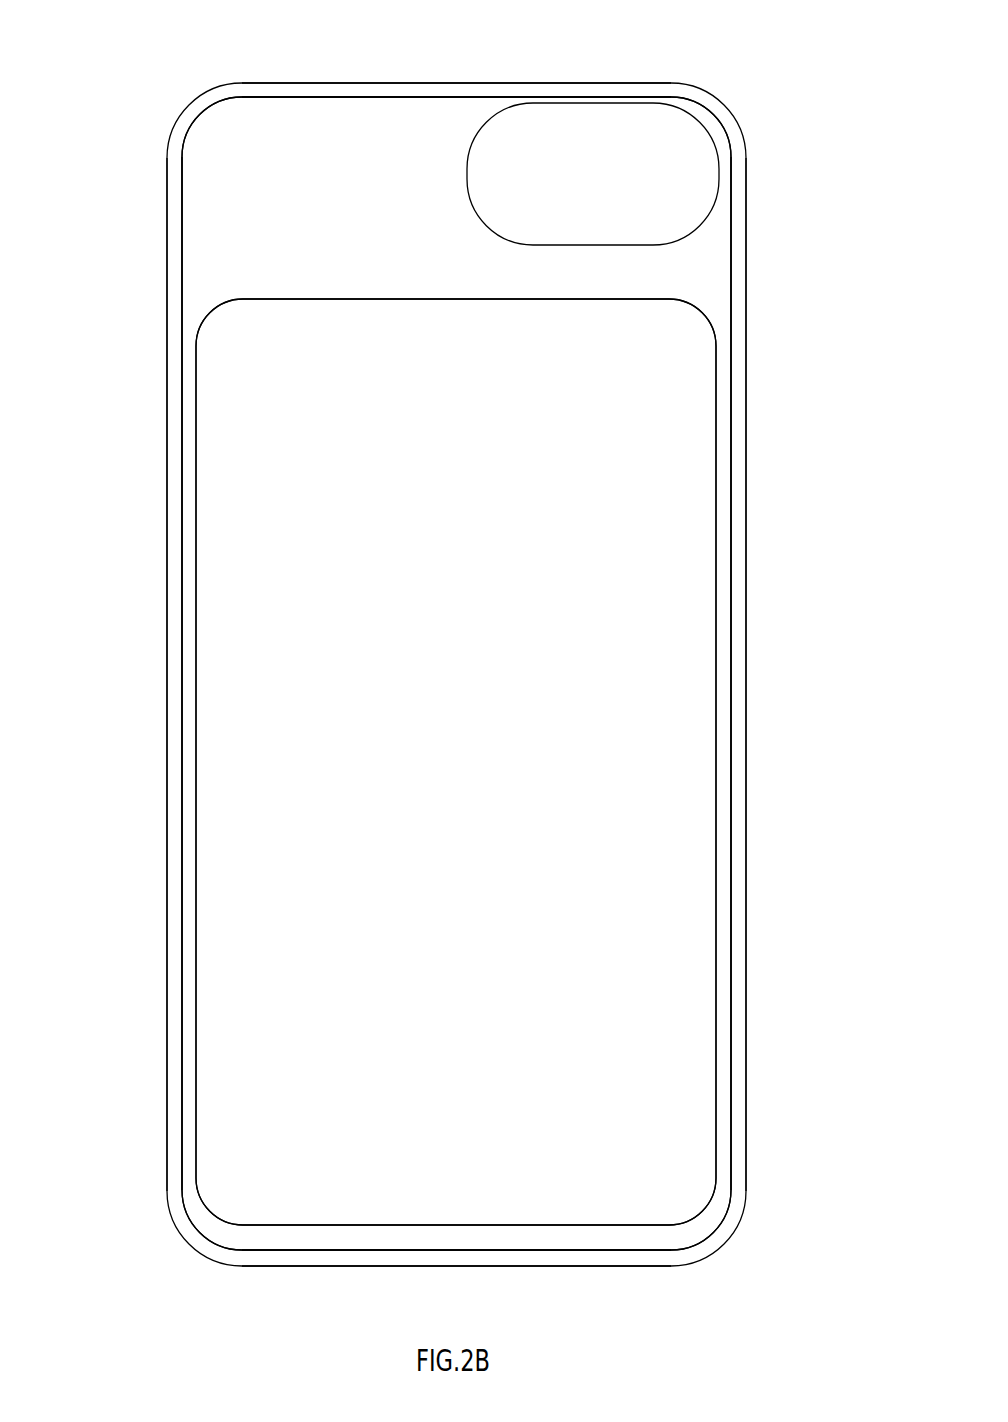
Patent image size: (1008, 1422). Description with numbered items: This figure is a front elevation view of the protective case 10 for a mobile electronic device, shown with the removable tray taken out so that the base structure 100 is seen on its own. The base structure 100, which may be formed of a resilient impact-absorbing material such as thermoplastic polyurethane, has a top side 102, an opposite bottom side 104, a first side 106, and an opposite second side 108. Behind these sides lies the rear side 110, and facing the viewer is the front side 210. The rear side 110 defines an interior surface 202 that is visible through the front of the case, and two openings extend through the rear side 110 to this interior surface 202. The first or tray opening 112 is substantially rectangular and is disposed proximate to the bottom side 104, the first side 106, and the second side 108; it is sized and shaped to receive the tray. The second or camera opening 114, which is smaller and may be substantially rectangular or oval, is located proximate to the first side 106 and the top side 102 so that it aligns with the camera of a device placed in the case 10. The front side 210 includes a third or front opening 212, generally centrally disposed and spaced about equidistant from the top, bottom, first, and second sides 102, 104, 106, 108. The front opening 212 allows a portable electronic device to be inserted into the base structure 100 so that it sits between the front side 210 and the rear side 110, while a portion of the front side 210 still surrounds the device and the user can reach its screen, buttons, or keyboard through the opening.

The protective case 10 is at (814, 86).
The base structure 100 is at (762, 58).
The top side 102 is at (511, 58).
The bottom side 104 is at (336, 1282).
The first side 106 is at (775, 666).
The second side 108 is at (120, 701).
The rear side 110 is at (311, 238).
The tray opening 112 is at (231, 458).
The camera opening 114 is at (600, 126).
The interior surface 202 is at (262, 176).
The front side 210 is at (192, 118).
The front opening 212 is at (318, 130).